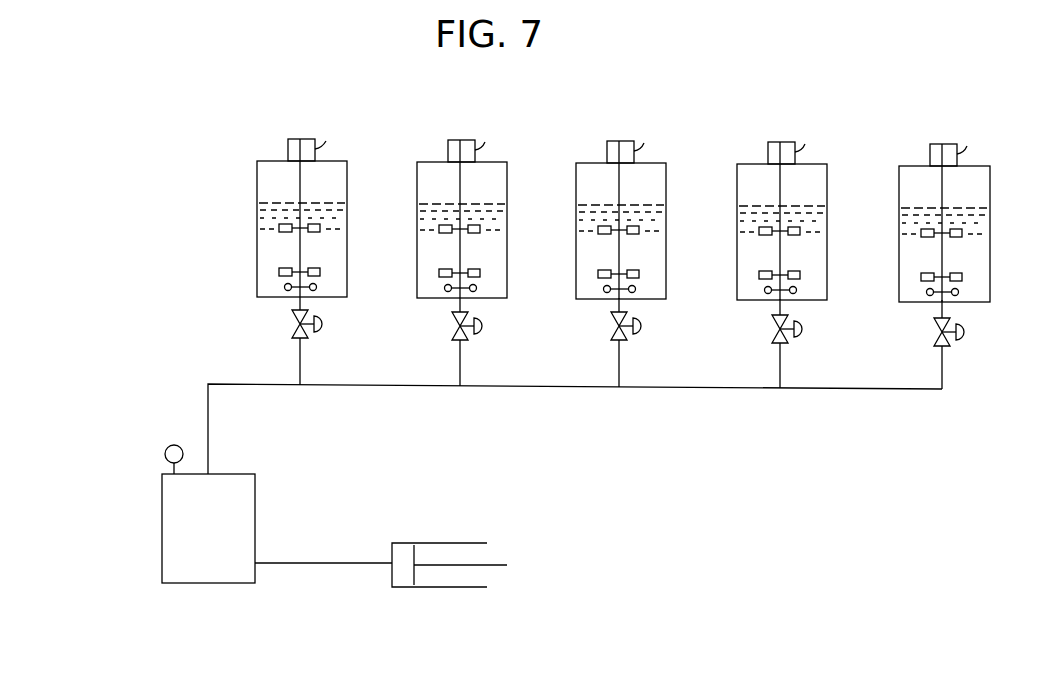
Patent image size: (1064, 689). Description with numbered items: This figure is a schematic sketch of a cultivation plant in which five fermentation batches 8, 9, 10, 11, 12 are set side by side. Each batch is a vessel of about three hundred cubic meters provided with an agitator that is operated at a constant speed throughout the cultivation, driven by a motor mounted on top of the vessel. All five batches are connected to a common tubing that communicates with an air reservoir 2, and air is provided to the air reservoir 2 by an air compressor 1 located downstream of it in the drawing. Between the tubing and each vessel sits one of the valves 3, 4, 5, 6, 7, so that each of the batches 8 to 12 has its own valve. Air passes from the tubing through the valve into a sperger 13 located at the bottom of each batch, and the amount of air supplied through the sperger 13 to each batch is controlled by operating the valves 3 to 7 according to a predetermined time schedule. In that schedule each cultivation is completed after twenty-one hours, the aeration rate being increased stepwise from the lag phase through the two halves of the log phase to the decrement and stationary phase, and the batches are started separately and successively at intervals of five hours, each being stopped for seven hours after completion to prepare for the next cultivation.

The air compressor 1 is at (430, 588).
The air reservoir 2 is at (240, 584).
The valve 3 is at (325, 332).
The valve 4 is at (485, 342).
The valve 5 is at (645, 342).
The valve 6 is at (802, 343).
The valve 7 is at (965, 344).
The batch 8 is at (347, 216).
The batch 9 is at (479, 213).
The batch 10 is at (648, 214).
The batch 11 is at (810, 215).
The batch 12 is at (970, 217).
The sperger 13 is at (284, 287).